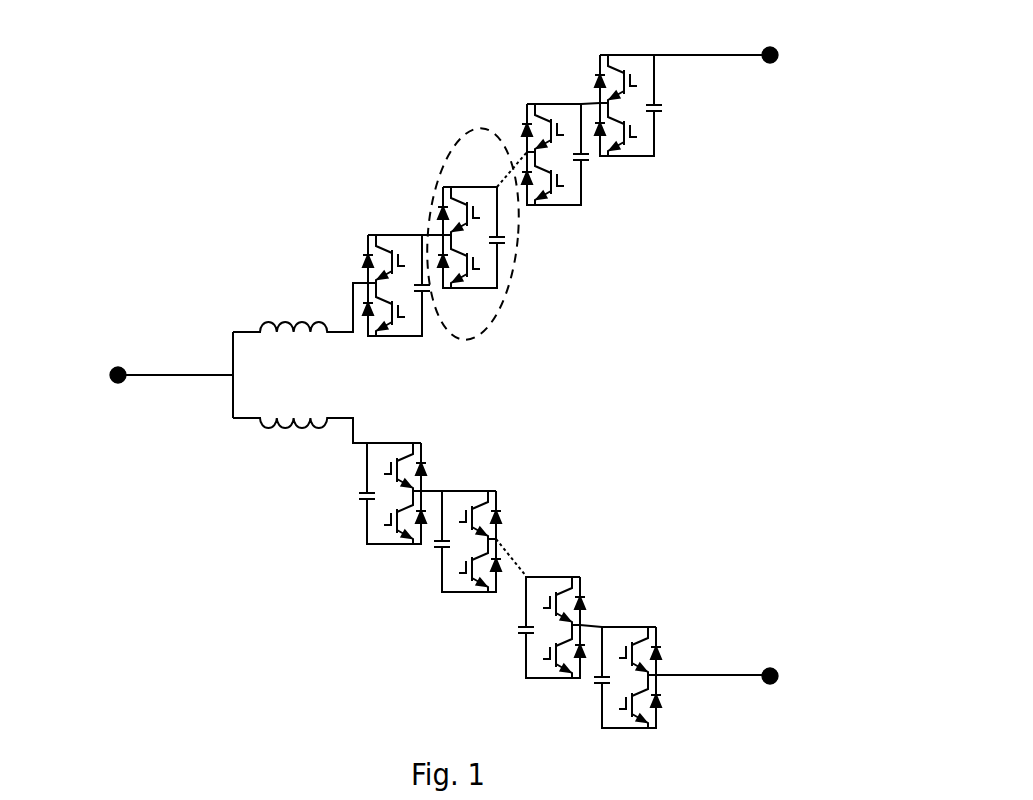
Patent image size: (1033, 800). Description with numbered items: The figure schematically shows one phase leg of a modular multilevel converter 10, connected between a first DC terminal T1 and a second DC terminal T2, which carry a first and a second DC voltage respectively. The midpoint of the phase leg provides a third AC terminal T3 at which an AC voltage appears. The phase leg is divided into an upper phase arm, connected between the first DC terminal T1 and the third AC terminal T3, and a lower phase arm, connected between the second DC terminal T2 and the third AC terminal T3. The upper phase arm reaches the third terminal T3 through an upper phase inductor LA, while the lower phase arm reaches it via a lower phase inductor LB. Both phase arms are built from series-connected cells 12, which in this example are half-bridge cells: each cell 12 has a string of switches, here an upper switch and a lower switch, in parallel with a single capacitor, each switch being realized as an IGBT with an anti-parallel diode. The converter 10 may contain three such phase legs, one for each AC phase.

The modular multilevel converter 10 is at (203, 180).
The cell 12 is at (445, 150).
The first direct current terminal T1 is at (746, 49).
The second direct current terminal T2 is at (747, 663).
The third alternating current terminal T3 is at (149, 373).
The upper phase inductor LA is at (300, 307).
The lower phase inductor LB is at (300, 446).